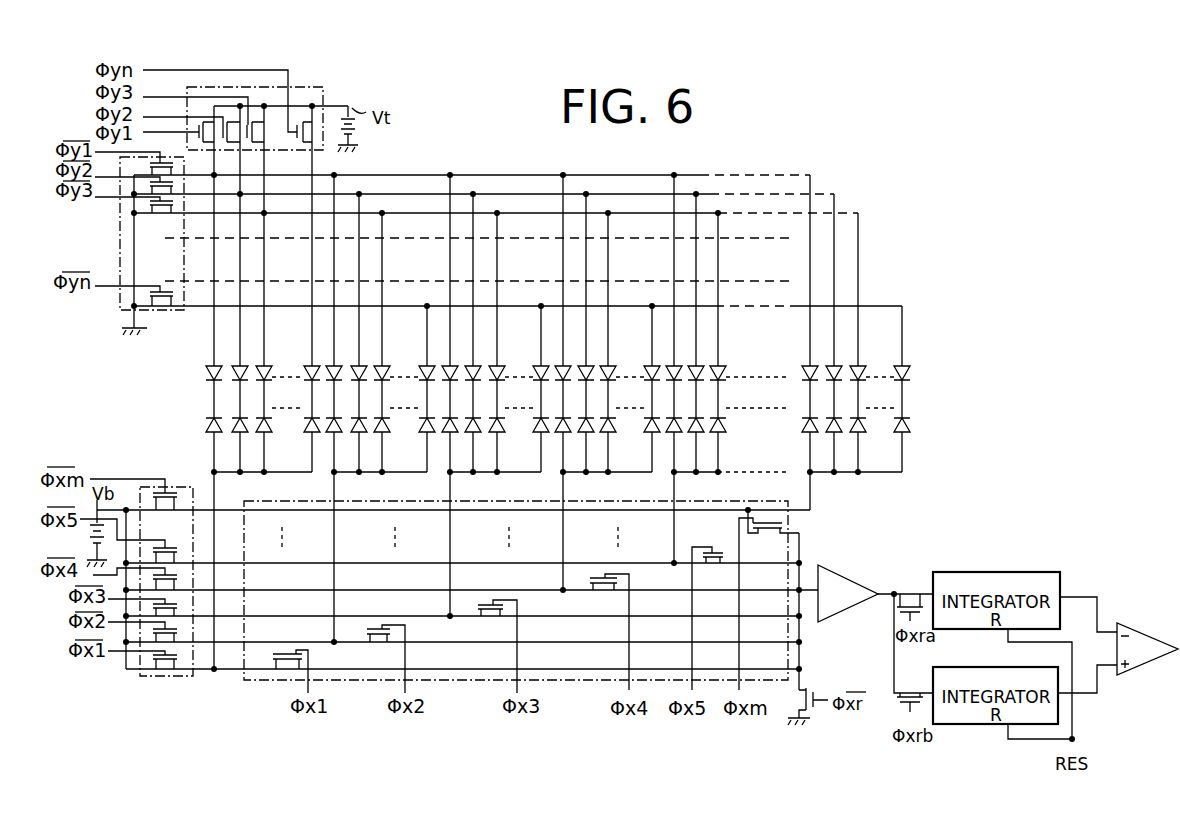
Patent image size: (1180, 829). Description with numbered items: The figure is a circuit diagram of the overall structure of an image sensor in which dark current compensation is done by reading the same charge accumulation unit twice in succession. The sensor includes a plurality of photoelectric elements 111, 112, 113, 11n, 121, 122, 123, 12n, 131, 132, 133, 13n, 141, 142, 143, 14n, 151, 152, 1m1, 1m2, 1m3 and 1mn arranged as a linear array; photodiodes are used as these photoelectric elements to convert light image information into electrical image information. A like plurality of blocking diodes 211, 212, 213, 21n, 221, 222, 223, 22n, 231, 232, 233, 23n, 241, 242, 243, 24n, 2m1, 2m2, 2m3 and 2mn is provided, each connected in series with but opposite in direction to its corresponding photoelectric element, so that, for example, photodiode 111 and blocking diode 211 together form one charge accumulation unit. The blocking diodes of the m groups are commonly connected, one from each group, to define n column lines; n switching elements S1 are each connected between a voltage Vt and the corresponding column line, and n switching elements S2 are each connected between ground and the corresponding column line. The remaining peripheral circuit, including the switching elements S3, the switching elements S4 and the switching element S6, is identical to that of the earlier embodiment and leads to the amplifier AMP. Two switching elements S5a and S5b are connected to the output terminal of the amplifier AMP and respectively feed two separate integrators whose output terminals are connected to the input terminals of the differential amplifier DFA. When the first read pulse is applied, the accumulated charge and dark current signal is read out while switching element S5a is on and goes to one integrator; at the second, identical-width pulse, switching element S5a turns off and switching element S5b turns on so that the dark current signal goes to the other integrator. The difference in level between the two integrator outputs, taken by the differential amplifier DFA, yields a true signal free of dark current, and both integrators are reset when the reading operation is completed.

The photoelectric element 111 is at (211, 426).
The photoelectric element 112 is at (234, 432).
The photoelectric element 113 is at (265, 437).
The photoelectric element 11n is at (309, 430).
The photoelectric element 121 is at (333, 434).
The photoelectric element 122 is at (358, 434).
The photoelectric element 123 is at (384, 437).
The photoelectric element 12n is at (426, 430).
The photoelectric element 131 is at (449, 434).
The photoelectric element 132 is at (473, 434).
The photoelectric element 133 is at (497, 437).
The photoelectric element 13n is at (540, 430).
The photoelectric element 141 is at (562, 434).
The photoelectric element 142 is at (585, 434).
The photoelectric element 143 is at (608, 437).
The photoelectric element 14n is at (651, 430).
The photoelectric element 151 is at (673, 434).
The photoelectric element 152 is at (695, 434).
The photoelectric element 1m1 is at (808, 433).
The photoelectric element 1m2 is at (833, 433).
The photoelectric element 1m3 is at (858, 433).
The photoelectric element 1mn is at (904, 433).
The blocking diode 211 is at (211, 368).
The blocking diode 212 is at (236, 364).
The blocking diode 213 is at (267, 363).
The blocking diode 21n is at (309, 366).
The blocking diode 221 is at (374, 344).
The blocking diode 222 is at (362, 364).
The blocking diode 223 is at (383, 366).
The blocking diode 22n is at (426, 380).
The blocking diode 231 is at (488, 346).
The blocking diode 232 is at (500, 355).
The blocking diode 233 is at (496, 377).
The blocking diode 23n is at (540, 380).
The blocking diode 241 is at (600, 346).
The blocking diode 242 is at (611, 355).
The blocking diode 243 is at (607, 377).
The blocking diode 24n is at (651, 380).
The blocking diode 2m1 is at (802, 370).
The blocking diode 2m2 is at (836, 366).
The blocking diode 2m3 is at (858, 366).
The blocking diode 2mn is at (904, 370).
The switching elements S1 is at (323, 93).
The switching elements S2 is at (177, 310).
The switching elements S3 is at (160, 676).
The switching elements S4 is at (244, 655).
The switching element S5a is at (910, 600).
The switching element S5b is at (906, 693).
The switching element S6 is at (814, 689).
The amplifier AMP is at (848, 571).
The differential amplifier DFA is at (1147, 668).